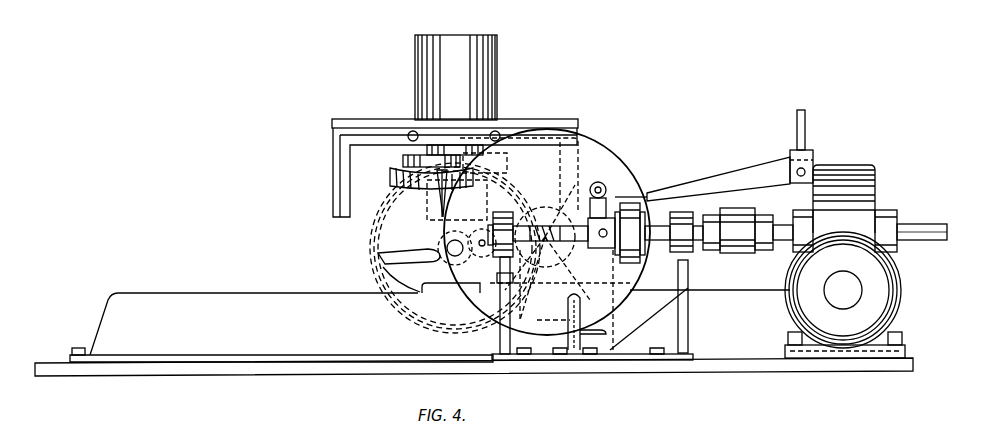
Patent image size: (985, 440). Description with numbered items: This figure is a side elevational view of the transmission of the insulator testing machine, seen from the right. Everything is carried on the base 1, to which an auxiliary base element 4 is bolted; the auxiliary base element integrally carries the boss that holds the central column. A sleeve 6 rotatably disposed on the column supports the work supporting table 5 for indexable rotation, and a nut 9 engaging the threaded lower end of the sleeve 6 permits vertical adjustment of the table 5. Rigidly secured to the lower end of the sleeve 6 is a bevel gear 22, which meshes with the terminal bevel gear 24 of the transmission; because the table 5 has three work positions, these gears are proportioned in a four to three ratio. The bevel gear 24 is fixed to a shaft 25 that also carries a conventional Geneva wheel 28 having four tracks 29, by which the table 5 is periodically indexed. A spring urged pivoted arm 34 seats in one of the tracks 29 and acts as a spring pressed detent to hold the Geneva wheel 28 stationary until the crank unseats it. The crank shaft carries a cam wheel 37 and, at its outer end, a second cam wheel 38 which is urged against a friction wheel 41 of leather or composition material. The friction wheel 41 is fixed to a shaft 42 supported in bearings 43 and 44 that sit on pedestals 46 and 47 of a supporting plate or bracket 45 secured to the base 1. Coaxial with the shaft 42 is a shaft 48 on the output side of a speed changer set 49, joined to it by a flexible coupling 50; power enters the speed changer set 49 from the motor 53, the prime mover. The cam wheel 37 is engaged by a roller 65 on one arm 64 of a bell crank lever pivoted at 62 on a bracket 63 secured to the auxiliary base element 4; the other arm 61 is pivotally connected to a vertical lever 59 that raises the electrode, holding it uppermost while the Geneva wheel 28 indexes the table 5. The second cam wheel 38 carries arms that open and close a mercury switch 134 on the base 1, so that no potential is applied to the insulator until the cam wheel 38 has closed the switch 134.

The base 1 is at (915, 366).
The auxiliary base element 4 is at (130, 304).
The work supporting table 5 is at (566, 118).
The sleeve 6 is at (489, 74).
The nut 9 is at (332, 166).
The bevel gear 22 is at (395, 178).
The bevel gear 24 is at (370, 242).
The shaft 25 is at (448, 250).
The Geneva wheel 28 is at (392, 279).
The tracks 29 is at (392, 257).
The pivoted arm 34 is at (572, 290).
The cam wheel 37 is at (542, 199).
The second cam wheel 38 is at (596, 140).
The friction wheel 41 is at (645, 208).
The shaft 42 is at (675, 214).
The bearing 43 is at (497, 212).
The bearing 44 is at (708, 221).
The supporting plate or bracket 45 is at (672, 362).
The pedestal 46 is at (499, 336).
The pedestal 47 is at (689, 315).
The shaft 48 is at (918, 224).
The speed changer set 49 is at (863, 184).
The flexible coupling 50 is at (736, 211).
The motor 53 is at (903, 303).
The vertical lever 59 is at (805, 128).
The arm of bell crank lever 61 is at (749, 169).
The pivot 62 is at (602, 182).
The bracket 63 is at (606, 206).
The arm of bell crank 64 is at (625, 197).
The roller 65 is at (552, 252).
The mercury switch 134 is at (603, 335).